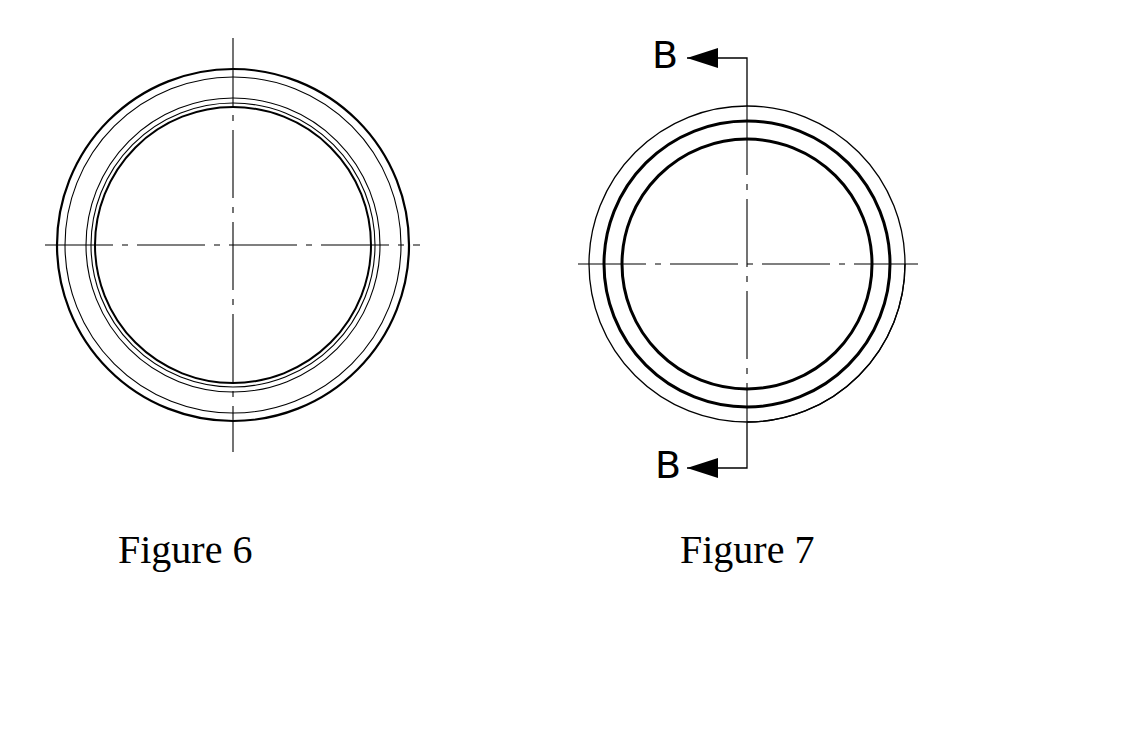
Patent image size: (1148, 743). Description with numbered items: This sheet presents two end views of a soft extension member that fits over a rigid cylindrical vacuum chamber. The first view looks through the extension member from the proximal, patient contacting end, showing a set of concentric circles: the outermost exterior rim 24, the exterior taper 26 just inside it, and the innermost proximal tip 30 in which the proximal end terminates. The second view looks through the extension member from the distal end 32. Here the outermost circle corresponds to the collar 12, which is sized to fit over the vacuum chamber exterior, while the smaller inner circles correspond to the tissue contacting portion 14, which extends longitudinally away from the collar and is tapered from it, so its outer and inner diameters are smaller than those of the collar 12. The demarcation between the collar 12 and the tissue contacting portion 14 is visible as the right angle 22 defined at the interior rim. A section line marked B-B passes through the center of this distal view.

In FIG. 7, the collar portion 12 is at (652, 142).
In FIG. 7, the tissue contacting portion 14 is at (788, 138).
In FIG. 7, the right angle 22 is at (872, 188).
In FIG. 6, the exterior rim 24 is at (307, 92).
In FIG. 6, the exterior taper 26 is at (348, 137).
In FIG. 6, the proximal tip 30 is at (368, 222).
In FIG. 7, the distal end 32 is at (897, 312).